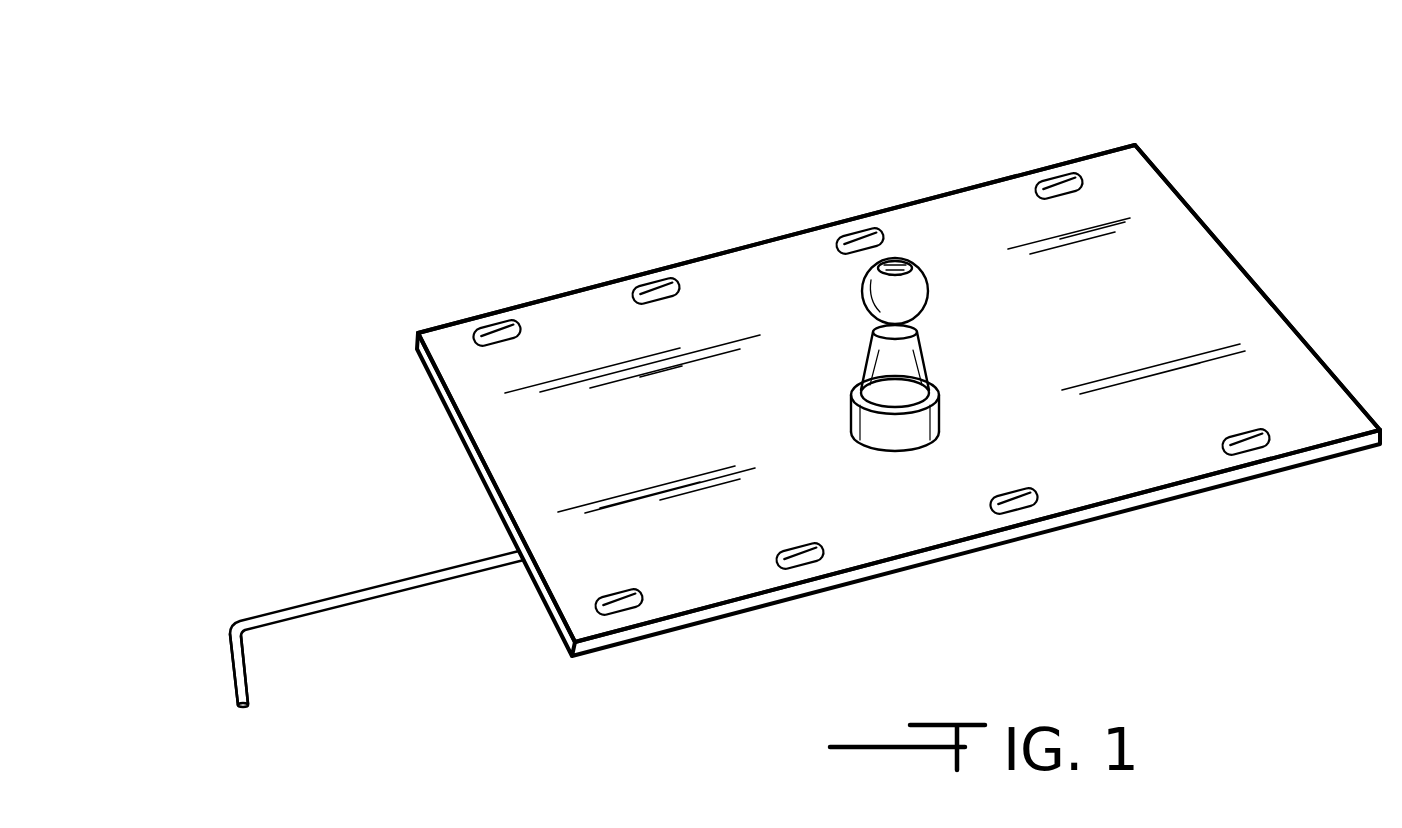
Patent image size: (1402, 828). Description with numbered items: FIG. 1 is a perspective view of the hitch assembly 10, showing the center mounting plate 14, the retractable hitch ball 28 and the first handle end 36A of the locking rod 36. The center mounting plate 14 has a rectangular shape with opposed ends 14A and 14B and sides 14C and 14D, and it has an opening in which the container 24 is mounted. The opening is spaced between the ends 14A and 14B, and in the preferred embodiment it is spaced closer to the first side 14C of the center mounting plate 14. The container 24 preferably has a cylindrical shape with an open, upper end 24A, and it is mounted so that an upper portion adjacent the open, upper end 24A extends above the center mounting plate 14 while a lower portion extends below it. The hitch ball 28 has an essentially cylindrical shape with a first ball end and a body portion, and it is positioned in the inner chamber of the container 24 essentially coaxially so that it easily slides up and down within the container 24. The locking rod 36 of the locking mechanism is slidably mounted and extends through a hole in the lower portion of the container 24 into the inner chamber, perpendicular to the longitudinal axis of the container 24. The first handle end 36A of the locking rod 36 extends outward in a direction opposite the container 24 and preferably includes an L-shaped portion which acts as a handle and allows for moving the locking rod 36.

The hitch assembly 10 is at (894, 112).
The center mounting plate 14 is at (1270, 298).
The end of center mounting plate 14A is at (452, 423).
The end of center mounting plate 14B is at (1215, 236).
The first side of center mounting plate 14C is at (925, 563).
The side of center mounting plate 14D is at (700, 258).
The container 24 is at (940, 410).
The open, upper end of container 24A is at (933, 376).
The hitch ball 28 is at (918, 292).
The locking rod 36 is at (380, 598).
The first handle end of locking rod 36A is at (229, 665).